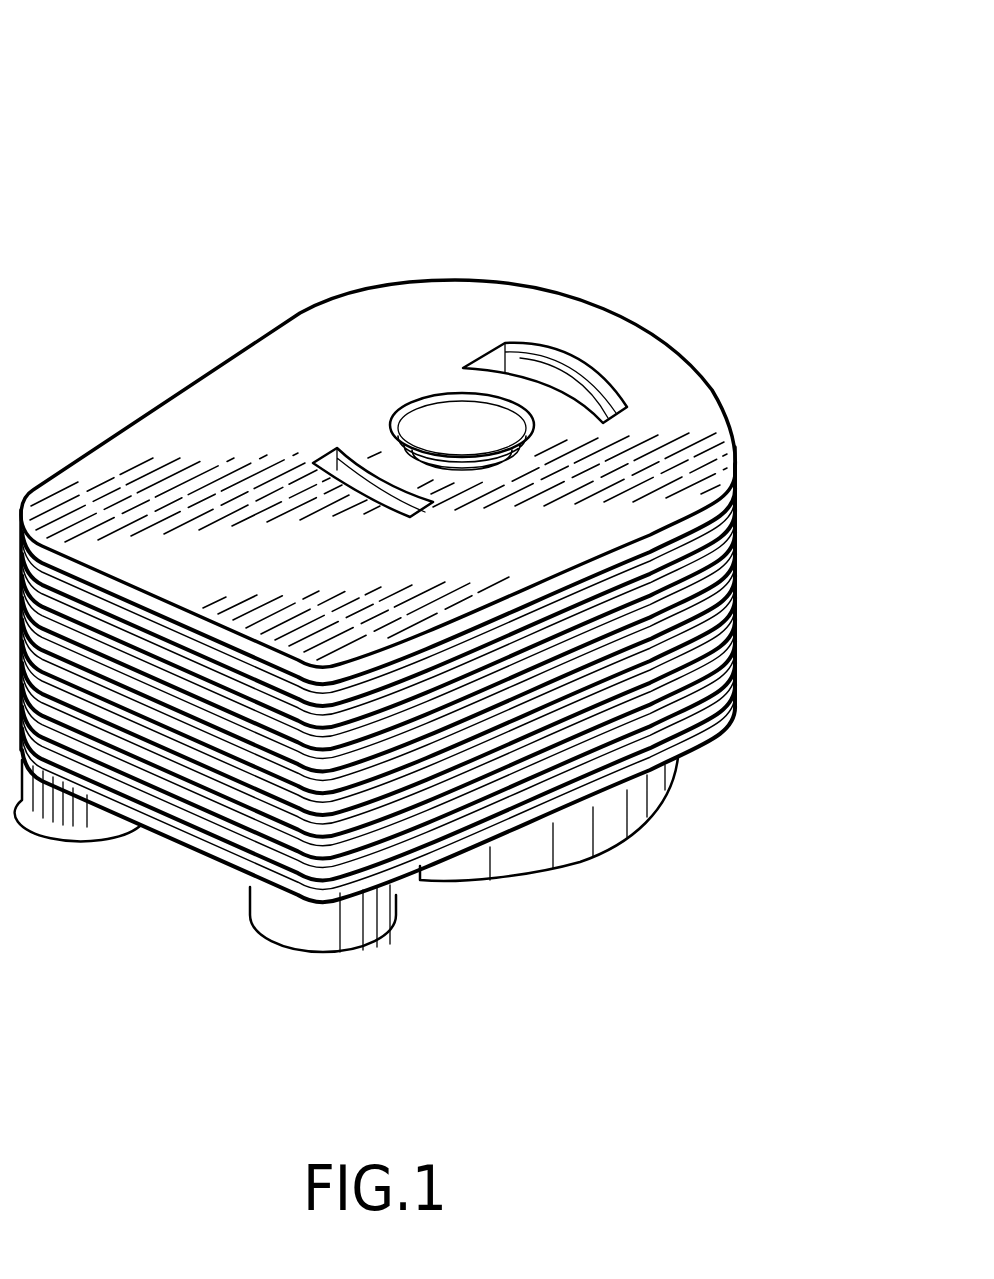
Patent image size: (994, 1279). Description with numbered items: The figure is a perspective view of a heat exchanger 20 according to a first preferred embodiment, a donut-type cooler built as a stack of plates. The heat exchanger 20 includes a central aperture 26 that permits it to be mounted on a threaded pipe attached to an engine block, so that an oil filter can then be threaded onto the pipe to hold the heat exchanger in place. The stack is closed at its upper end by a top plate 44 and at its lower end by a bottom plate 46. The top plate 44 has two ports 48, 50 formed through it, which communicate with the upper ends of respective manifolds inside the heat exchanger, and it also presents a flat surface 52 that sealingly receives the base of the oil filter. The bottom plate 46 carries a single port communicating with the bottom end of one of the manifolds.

The heat exchanger 20 is at (262, 148).
The central aperture 26 is at (432, 390).
The top plate 44 is at (728, 487).
The bottom plate 46 is at (700, 737).
The port 48 is at (323, 443).
The port 50 is at (535, 333).
The flat surface 52 is at (296, 590).